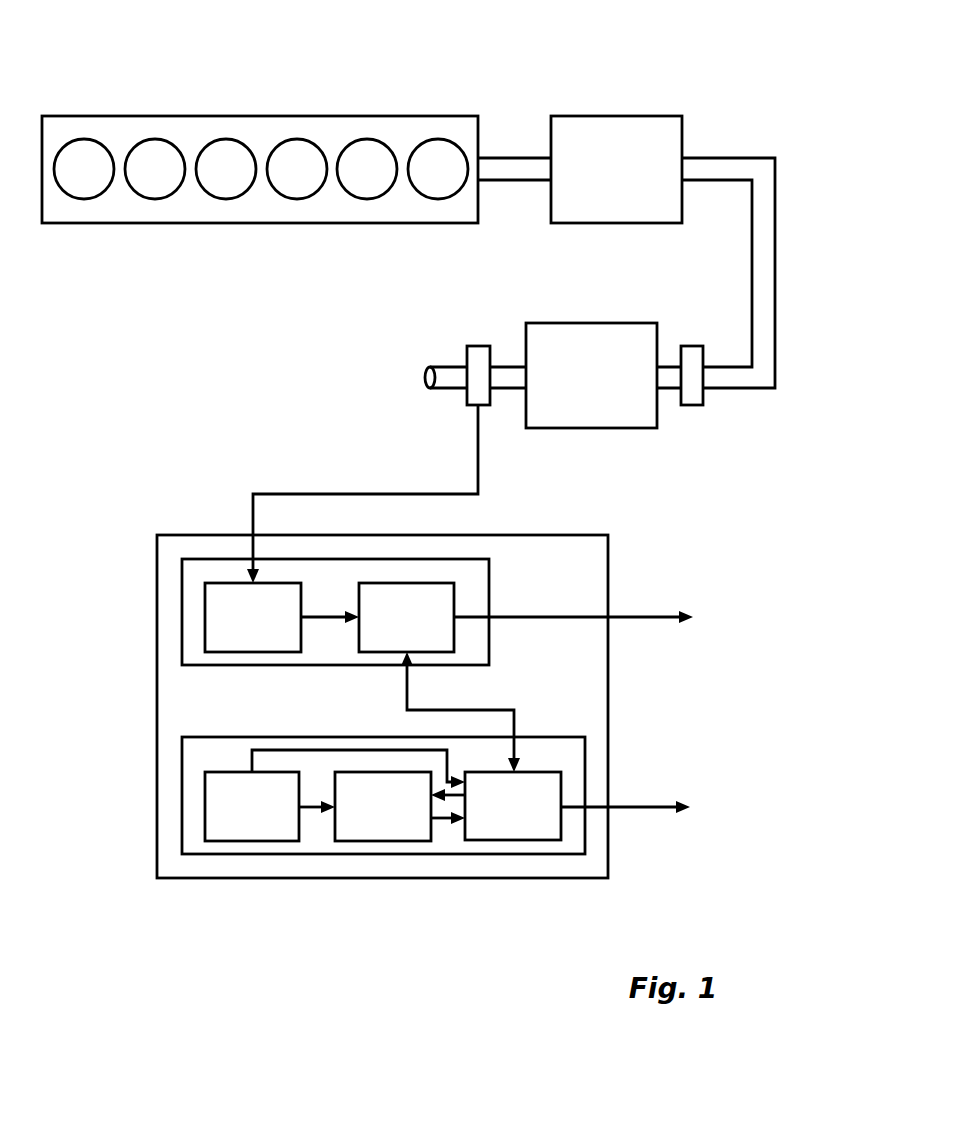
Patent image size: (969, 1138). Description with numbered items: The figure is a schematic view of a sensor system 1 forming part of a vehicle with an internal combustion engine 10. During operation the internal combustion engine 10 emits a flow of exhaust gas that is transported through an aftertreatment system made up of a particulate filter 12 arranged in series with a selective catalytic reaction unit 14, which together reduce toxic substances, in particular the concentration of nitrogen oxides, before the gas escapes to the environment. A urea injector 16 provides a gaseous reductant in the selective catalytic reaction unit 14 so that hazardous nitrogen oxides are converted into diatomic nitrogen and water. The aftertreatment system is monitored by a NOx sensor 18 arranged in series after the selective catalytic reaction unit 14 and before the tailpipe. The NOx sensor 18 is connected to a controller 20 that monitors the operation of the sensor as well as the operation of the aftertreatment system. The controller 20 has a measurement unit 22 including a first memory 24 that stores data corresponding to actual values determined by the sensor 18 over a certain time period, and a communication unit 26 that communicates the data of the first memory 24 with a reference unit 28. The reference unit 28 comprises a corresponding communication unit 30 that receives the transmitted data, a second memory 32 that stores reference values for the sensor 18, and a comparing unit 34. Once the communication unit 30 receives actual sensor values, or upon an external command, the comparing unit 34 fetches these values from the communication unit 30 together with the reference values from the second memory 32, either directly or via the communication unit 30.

The sensor system 1 is at (237, 417).
The internal combustion engine 10 is at (247, 223).
The particulate filter 12 is at (647, 116).
The selective catalytic reaction unit 14 is at (558, 323).
The urea injector 16 is at (692, 405).
The NOx sensor 18 is at (467, 352).
The controller 20 is at (610, 580).
The measurement unit 22 is at (197, 559).
The first memory 24 is at (205, 613).
The communication unit 26 is at (432, 582).
The reference unit 28 is at (585, 821).
The communication unit 30 is at (527, 840).
The second memory 32 is at (263, 841).
The comparing unit 34 is at (382, 841).